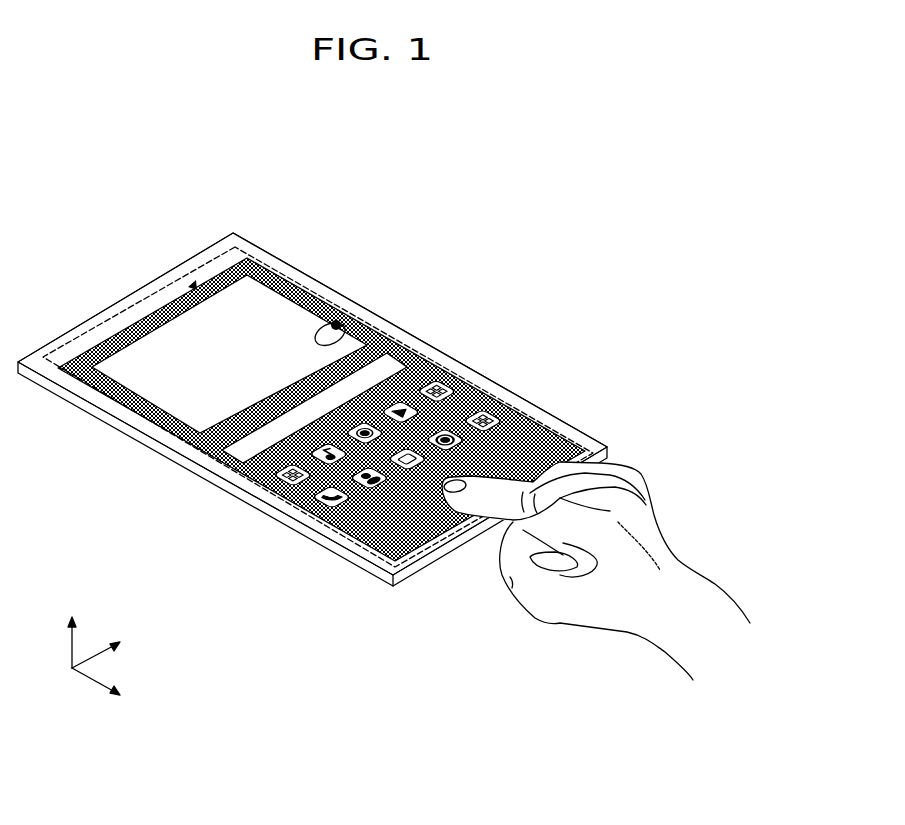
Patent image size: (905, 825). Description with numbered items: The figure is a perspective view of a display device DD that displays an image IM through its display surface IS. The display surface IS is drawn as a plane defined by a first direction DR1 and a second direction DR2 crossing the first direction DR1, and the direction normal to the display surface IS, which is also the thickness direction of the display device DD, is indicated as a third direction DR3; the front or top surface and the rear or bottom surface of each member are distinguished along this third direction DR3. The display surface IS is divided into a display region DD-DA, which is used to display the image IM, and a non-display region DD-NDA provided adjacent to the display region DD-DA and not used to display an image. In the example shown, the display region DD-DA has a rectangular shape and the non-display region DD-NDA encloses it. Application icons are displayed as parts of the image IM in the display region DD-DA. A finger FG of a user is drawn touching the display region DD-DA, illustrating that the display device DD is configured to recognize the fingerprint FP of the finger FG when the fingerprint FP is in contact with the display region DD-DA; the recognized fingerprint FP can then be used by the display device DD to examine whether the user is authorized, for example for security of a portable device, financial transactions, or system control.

The display device DD is at (462, 247).
The display surface IS is at (103, 218).
The display region DD-DA is at (321, 398).
The non-display region DD-NDA is at (92, 327).
The image IM is at (127, 400).
The finger FG is at (596, 518).
The fingerprint FP is at (443, 522).
The first direction DR1 is at (113, 690).
The second direction DR2 is at (112, 648).
The third direction DR3 is at (71, 632).